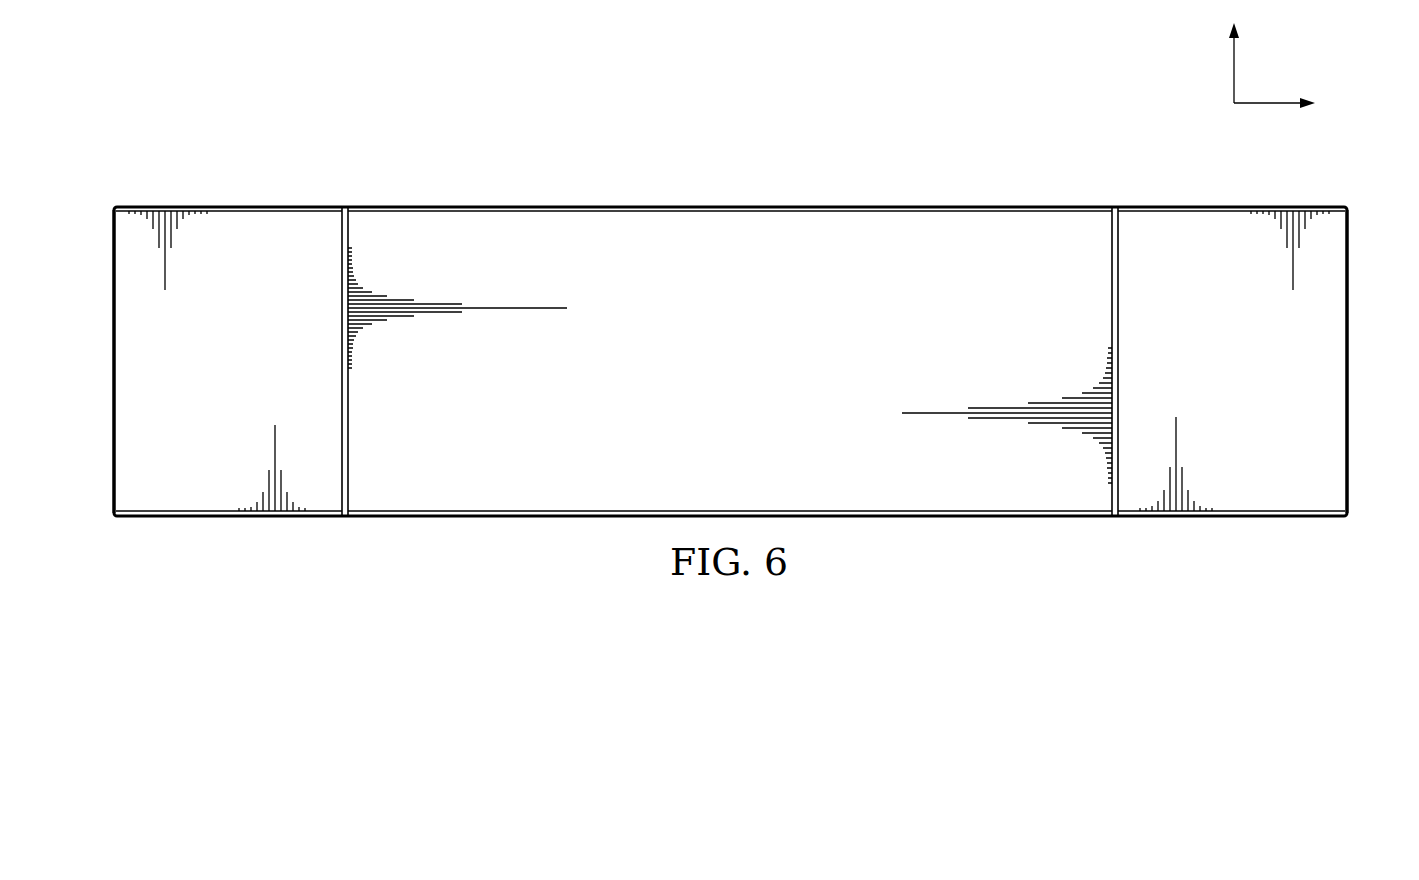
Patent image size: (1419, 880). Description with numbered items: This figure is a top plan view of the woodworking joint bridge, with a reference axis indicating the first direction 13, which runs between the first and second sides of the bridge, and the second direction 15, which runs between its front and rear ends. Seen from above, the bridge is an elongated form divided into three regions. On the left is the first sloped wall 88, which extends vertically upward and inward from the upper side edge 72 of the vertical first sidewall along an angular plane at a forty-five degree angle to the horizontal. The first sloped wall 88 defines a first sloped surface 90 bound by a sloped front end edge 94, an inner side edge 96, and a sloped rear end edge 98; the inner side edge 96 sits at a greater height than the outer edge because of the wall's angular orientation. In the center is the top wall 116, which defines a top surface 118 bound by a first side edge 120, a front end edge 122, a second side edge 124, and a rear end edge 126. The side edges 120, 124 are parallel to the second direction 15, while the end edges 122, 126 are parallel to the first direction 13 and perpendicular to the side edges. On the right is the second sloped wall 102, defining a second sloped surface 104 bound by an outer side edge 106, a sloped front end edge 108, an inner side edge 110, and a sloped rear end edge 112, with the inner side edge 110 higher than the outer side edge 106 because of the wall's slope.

The first direction 13 is at (1268, 103).
The second direction 15 is at (1234, 68).
The upper side edge 72 is at (113, 362).
The first sloped wall 88 is at (277, 226).
The first sloped surface 90 is at (248, 377).
The sloped front end edge 94 is at (188, 511).
The inner side edge 96 is at (341, 362).
The sloped rear end edge 98 is at (243, 213).
The second sloped wall 102 is at (1186, 226).
The second sloped surface 104 is at (1251, 377).
The outer side edge 106 is at (1348, 445).
The sloped front end edge 108 is at (1273, 511).
The inner side edge 110 is at (1118, 322).
The sloped rear end edge 112 is at (1223, 213).
The top wall 116 is at (630, 160).
The top surface 118 is at (730, 361).
The first side edge 120 is at (348, 432).
The front end edge 122 is at (640, 511).
The second side edge 124 is at (1112, 283).
The rear end edge 126 is at (562, 211).